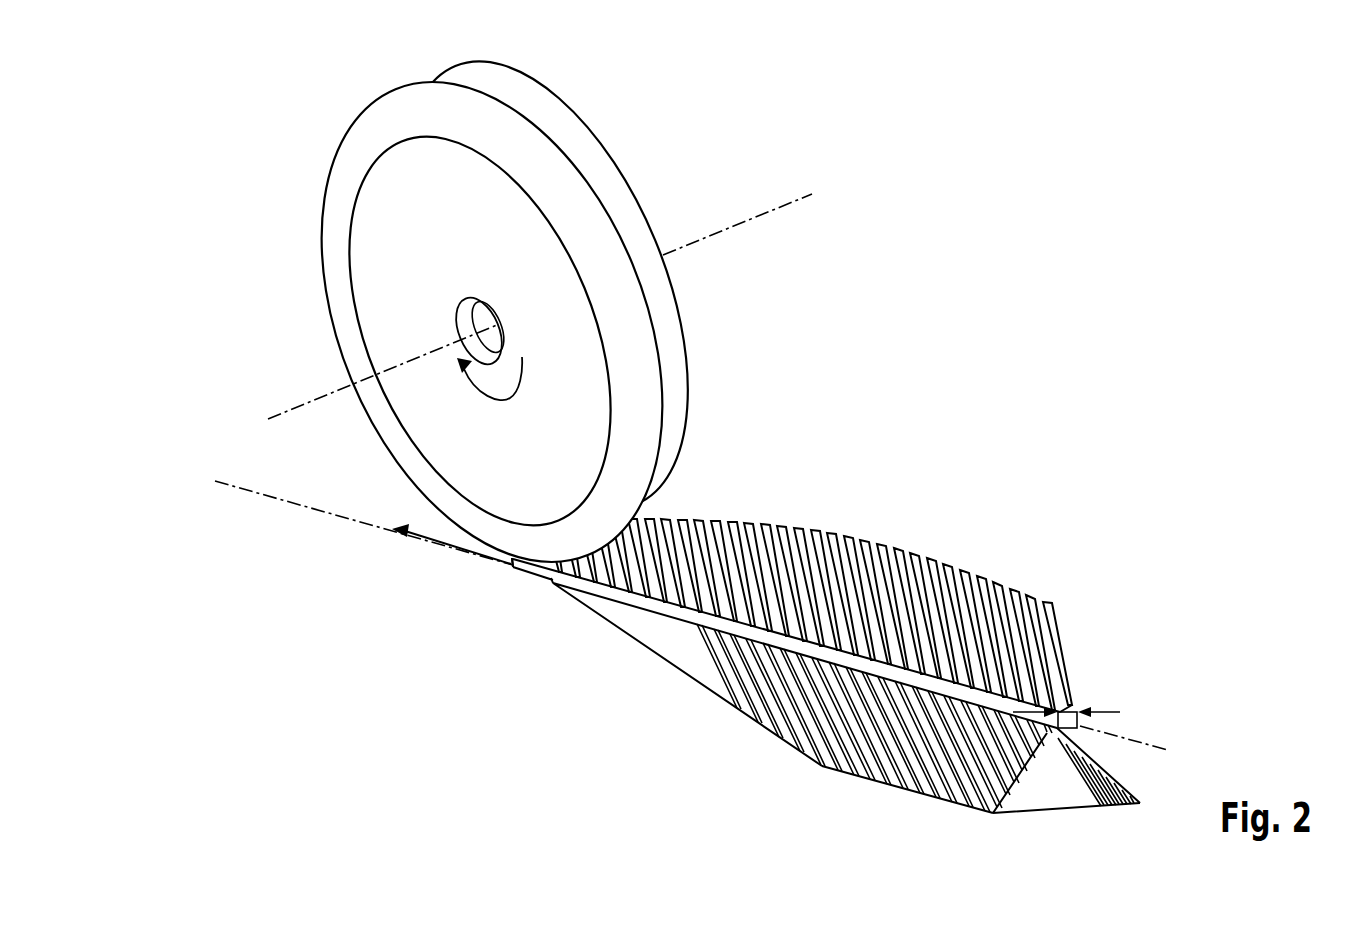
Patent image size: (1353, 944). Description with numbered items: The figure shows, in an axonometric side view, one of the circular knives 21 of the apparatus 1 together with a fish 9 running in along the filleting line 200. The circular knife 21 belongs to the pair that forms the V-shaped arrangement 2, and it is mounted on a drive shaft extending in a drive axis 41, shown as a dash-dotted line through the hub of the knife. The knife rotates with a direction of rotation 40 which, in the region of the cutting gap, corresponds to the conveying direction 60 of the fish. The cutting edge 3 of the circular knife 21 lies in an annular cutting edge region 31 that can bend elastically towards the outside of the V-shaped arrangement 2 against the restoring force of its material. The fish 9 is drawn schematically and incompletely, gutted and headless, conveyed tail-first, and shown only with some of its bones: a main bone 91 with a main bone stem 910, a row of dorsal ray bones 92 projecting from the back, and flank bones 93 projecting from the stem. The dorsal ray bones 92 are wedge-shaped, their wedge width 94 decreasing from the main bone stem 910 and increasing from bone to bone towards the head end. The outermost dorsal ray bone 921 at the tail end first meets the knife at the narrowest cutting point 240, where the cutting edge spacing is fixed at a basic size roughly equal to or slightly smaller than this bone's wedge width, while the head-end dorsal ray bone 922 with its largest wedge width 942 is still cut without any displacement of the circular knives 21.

The apparatus 1 is at (838, 290).
The V-shaped arrangement 2 is at (292, 242).
The cutting edge 3 is at (665, 395).
The circular knife 21 is at (340, 152).
The cutting edge region 31 is at (393, 442).
The direction of rotation 40 is at (505, 399).
The drive axis 41 is at (299, 402).
The fish 9 is at (930, 534).
The main bone 91 is at (745, 729).
The dorsal ray bone 92 is at (849, 530).
The outermost dorsal ray bone at the tail end 921 is at (553, 582).
The dorsal ray bone at the head-end region 922 is at (1050, 605).
The flank bone 93 is at (720, 690).
The main bone stem 910 is at (873, 672).
The wedge width 94 is at (1066, 717).
The wedge width of head-end dorsal ray bone 942 is at (1065, 712).
The filleting line 200 is at (246, 491).
The conveying direction 60 is at (435, 543).
The narrowest cutting point 240 is at (504, 579).